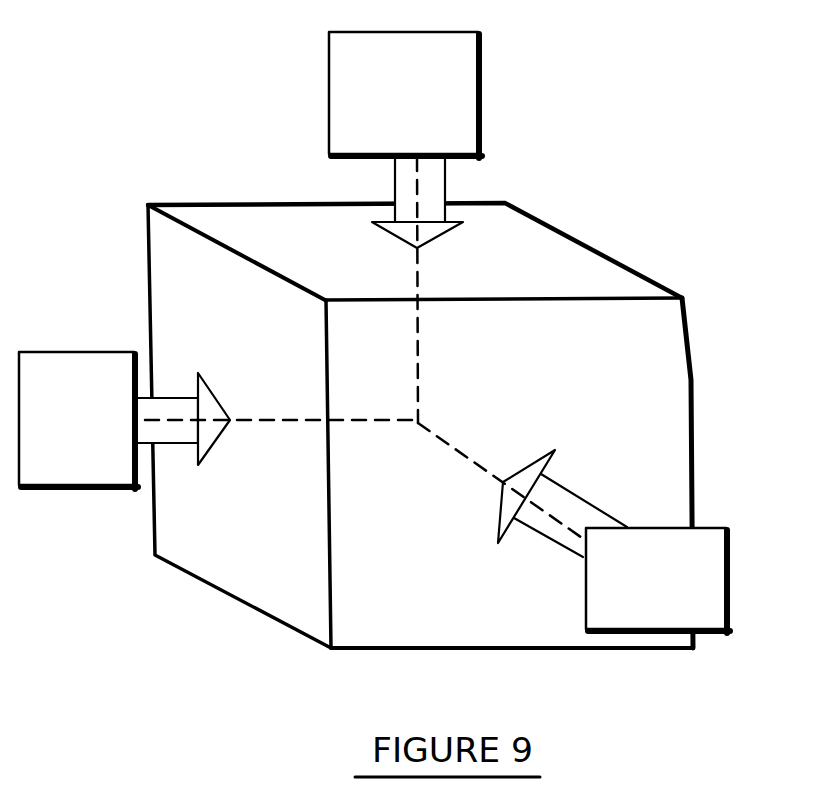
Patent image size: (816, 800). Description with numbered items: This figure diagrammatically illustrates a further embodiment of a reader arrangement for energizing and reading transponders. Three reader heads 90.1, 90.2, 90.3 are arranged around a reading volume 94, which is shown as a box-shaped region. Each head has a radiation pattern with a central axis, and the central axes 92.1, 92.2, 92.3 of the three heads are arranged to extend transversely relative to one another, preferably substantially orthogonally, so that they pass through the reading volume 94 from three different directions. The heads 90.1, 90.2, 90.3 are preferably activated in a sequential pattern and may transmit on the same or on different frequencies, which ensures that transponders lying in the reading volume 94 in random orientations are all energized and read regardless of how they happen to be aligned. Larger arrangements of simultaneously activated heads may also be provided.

The reader head 90.1 is at (405, 95).
The reader head 90.2 is at (78, 420).
The reader head 90.3 is at (658, 580).
The central axis of radiation pattern 92.1 is at (423, 198).
The central axis of radiation pattern 92.2 is at (173, 410).
The central axis of radiation pattern 92.3 is at (570, 517).
The reading volume 94 is at (652, 363).